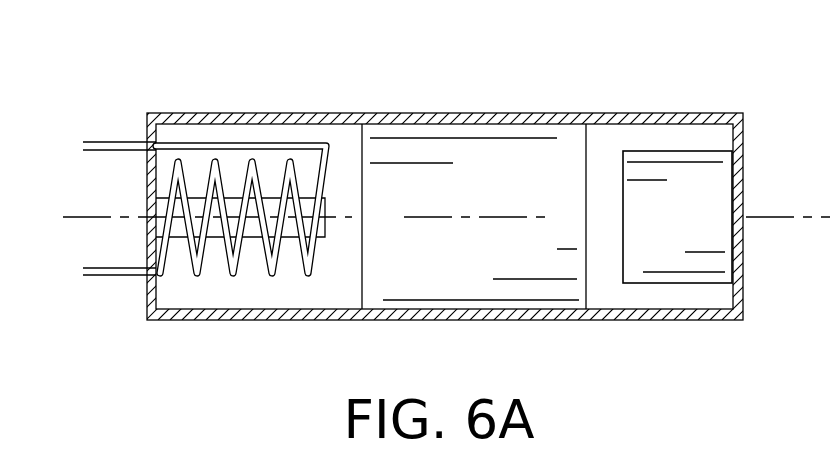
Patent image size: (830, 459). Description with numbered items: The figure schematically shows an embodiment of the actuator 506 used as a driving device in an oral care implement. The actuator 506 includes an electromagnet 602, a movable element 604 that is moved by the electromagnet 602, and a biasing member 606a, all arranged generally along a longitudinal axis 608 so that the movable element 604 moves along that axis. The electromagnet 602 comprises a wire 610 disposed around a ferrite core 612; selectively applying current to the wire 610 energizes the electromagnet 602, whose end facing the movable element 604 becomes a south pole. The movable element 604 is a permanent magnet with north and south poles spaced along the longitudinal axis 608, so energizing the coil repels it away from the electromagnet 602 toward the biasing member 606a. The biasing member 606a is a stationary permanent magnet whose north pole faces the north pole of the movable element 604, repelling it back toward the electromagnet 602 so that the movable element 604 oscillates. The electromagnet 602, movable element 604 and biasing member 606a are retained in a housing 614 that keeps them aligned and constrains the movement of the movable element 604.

The actuator 506 is at (641, 99).
The electromagnet 602 is at (200, 104).
The movable element 604 is at (432, 150).
The biasing member 606a is at (697, 166).
The longitudinal axis 608 is at (815, 216).
The wire 610 is at (107, 278).
The ferrite core 612 is at (218, 228).
The housing 614 is at (560, 114).